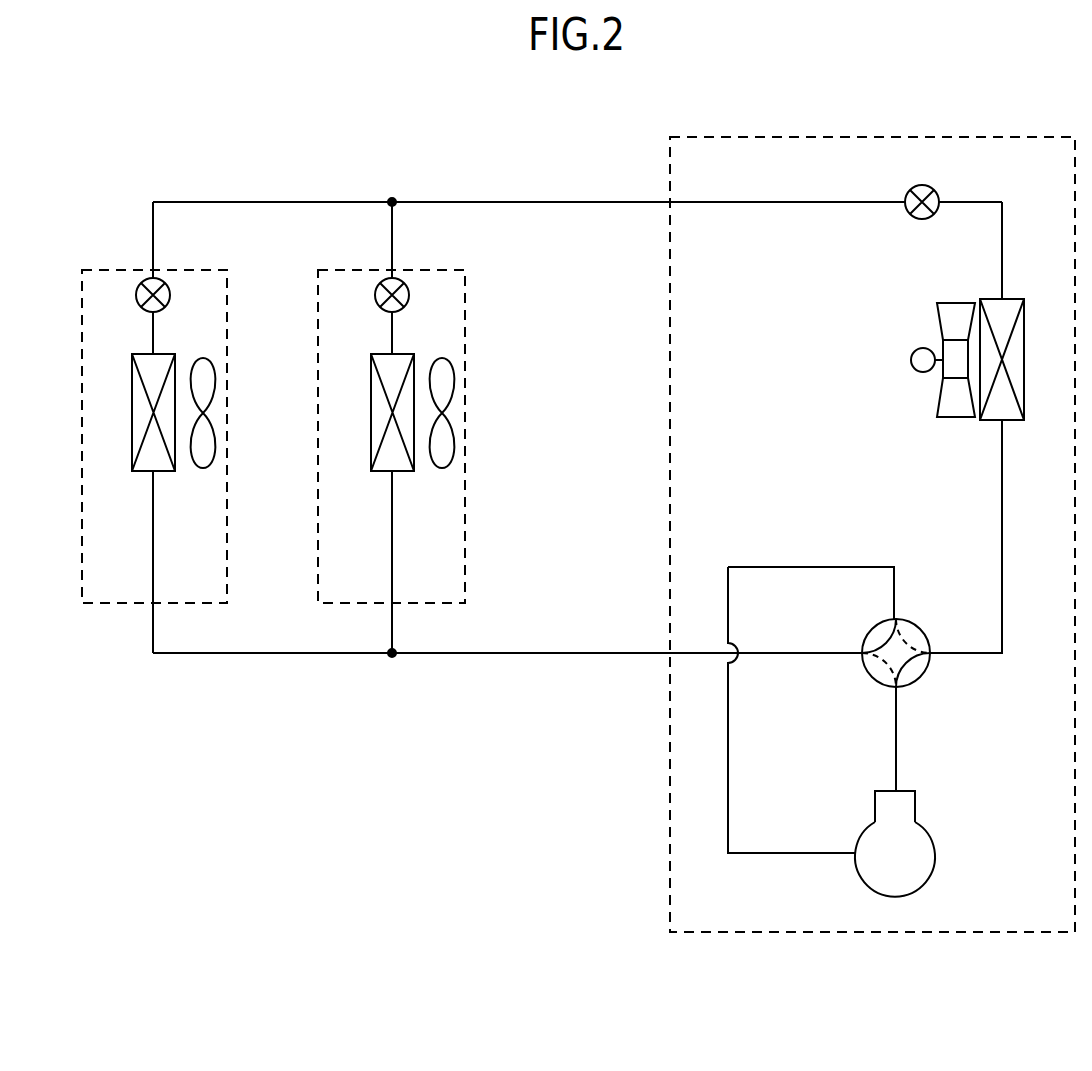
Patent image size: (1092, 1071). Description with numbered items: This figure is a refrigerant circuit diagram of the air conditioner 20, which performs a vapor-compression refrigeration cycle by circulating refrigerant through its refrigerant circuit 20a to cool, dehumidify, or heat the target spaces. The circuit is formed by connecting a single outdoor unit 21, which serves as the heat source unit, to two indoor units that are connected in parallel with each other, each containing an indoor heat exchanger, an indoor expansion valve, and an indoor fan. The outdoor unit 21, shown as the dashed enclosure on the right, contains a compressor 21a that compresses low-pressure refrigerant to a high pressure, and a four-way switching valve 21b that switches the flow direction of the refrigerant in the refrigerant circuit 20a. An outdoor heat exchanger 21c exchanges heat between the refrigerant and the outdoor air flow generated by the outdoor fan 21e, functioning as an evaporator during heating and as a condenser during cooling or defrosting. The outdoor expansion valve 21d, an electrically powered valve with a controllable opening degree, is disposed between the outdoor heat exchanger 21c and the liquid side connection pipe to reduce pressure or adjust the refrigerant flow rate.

The air conditioner 20 is at (789, 85).
The refrigerant circuit 20a is at (610, 674).
The outdoor unit 21 is at (954, 126).
The compressor 21a is at (931, 860).
The four-way switching valve 21b is at (917, 623).
The outdoor heat exchanger 21c is at (1017, 298).
The outdoor expansion valve 21d is at (920, 221).
The outdoor fan 21e is at (910, 360).